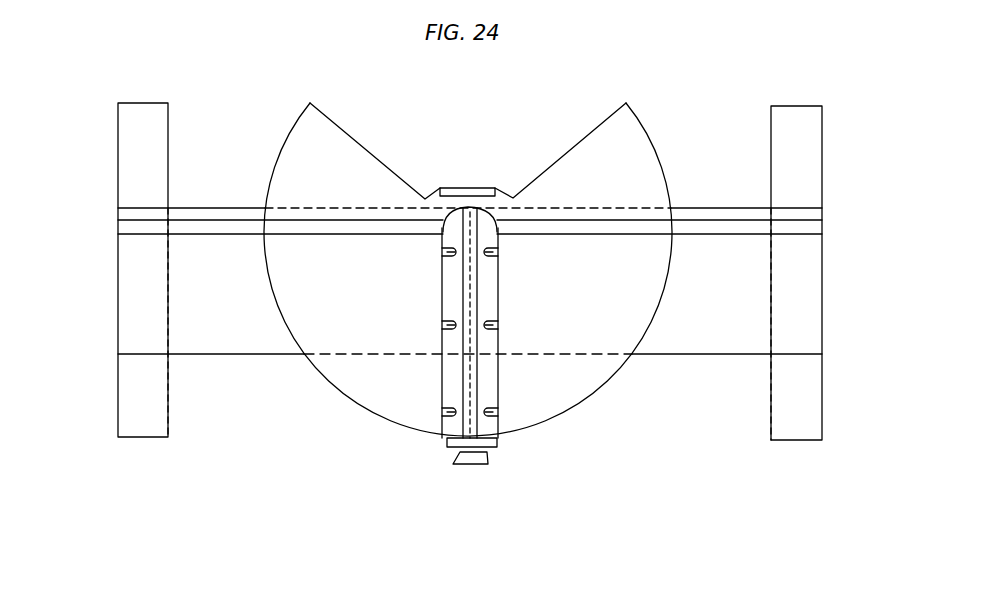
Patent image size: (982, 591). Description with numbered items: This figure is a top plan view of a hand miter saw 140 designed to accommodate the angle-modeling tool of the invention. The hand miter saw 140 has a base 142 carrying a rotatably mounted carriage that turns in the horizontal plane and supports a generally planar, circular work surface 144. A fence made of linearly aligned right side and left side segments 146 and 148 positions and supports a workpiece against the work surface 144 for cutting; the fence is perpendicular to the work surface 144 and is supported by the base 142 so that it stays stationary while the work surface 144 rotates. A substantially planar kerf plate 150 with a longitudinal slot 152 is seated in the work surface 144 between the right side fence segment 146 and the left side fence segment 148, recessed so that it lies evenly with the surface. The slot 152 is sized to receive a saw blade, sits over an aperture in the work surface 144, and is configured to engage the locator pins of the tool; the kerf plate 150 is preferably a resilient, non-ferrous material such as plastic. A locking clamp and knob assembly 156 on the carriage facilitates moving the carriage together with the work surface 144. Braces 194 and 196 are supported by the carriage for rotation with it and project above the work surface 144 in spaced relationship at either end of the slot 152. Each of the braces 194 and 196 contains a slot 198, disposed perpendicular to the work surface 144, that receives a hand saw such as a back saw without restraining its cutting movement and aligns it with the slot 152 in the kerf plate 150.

The hand miter saw 140 is at (106, 479).
The base 142 is at (135, 315).
The work surface 144 is at (690, 52).
The right side fence segment 146 is at (720, 232).
The left side fence segment 148 is at (213, 228).
The kerf plate 150 is at (497, 395).
The longitudinal slot 152 is at (472, 415).
The locking clamp and knob assembly 156 is at (468, 458).
The brace 194 is at (500, 176).
The brace 196 is at (463, 446).
The slot 198 is at (560, 137).